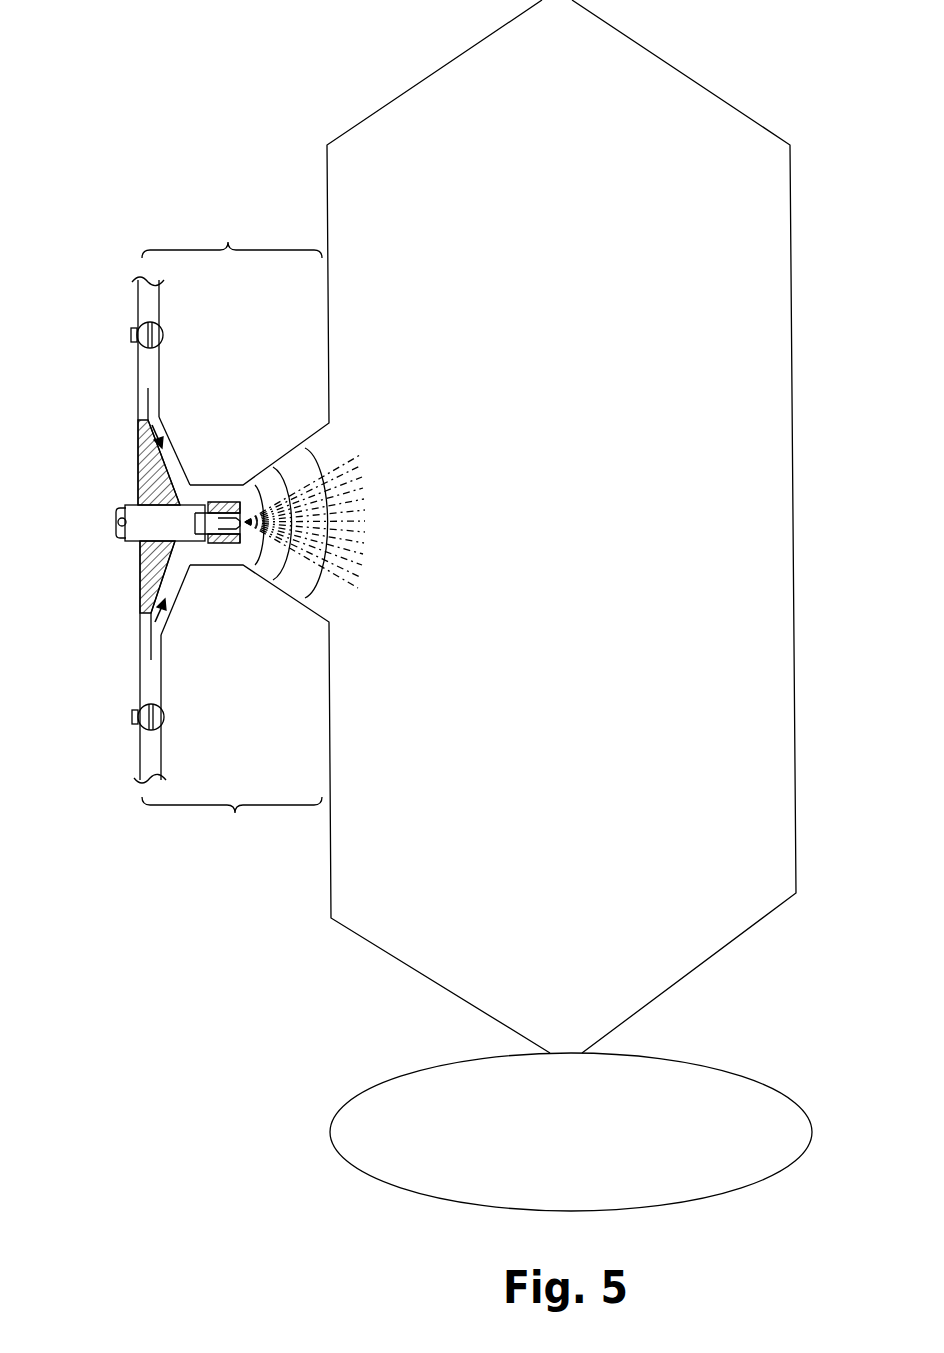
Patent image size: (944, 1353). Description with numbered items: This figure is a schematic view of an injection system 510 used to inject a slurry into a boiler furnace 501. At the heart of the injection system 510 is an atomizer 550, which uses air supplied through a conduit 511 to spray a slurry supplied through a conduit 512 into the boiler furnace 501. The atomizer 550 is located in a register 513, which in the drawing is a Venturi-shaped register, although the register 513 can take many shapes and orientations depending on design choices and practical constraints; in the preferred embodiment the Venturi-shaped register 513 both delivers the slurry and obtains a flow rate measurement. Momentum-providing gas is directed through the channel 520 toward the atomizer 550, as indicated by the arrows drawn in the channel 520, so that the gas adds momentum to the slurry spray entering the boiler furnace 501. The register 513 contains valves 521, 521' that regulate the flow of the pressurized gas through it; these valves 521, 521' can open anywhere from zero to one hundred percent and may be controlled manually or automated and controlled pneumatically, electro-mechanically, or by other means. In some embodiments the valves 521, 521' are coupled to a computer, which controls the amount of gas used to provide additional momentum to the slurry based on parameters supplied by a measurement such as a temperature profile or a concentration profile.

The boiler furnace 501 is at (587, 538).
The injection system 510 is at (224, 135).
The conduit 511 is at (127, 508).
The conduit 512 is at (116, 521).
The register 513 is at (227, 530).
The channel 520 is at (177, 455).
The valve 521 is at (178, 321).
The valve 521' is at (184, 703).
The atomizer 550 is at (137, 541).